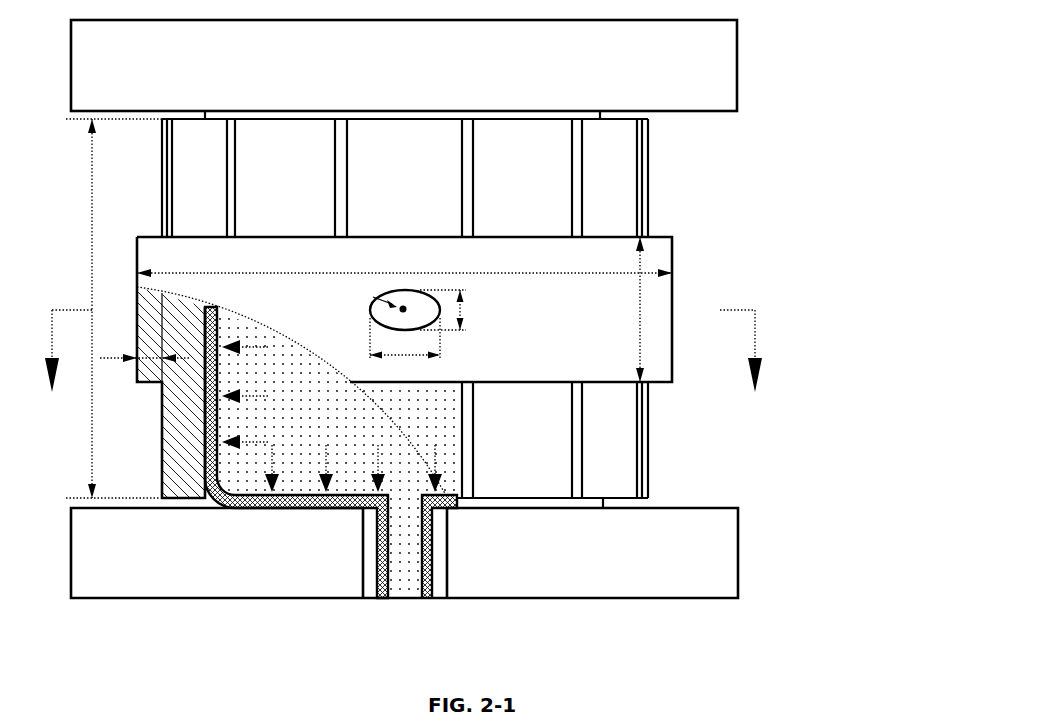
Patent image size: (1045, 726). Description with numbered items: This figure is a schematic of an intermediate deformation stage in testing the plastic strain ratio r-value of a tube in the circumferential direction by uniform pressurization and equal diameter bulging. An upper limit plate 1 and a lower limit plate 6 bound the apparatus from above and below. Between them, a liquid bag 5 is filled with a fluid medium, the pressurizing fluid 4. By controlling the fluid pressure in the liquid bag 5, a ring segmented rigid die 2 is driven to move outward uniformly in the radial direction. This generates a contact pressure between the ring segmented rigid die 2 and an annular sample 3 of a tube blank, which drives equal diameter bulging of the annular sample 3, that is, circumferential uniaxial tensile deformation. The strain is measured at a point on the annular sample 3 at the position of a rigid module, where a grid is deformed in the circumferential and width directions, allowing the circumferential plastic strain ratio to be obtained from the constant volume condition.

The upper limit plate 1 is at (676, 75).
The ring segmented rigid die 2 is at (424, 192).
The annular sample 3 is at (562, 290).
The pressurizing fluid 4 is at (333, 423).
The liquid bag 5 is at (440, 500).
The lower limit plate 6 is at (677, 553).